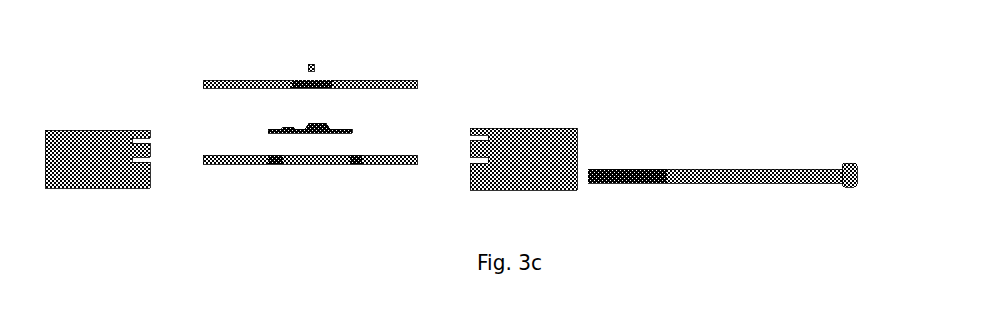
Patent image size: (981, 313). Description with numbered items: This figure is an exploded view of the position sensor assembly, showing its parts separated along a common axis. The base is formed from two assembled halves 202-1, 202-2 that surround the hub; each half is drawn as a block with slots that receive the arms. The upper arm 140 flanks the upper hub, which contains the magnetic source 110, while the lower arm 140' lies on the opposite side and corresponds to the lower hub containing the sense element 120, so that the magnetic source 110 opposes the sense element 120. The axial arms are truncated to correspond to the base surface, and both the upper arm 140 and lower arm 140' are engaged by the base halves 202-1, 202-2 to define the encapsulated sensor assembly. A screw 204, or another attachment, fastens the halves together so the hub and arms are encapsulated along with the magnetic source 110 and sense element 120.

The base half 202-1 is at (95, 130).
The base half 202-2 is at (545, 128).
The upper arm 140 is at (354, 60).
The lower arm 140' is at (310, 194).
The magnetic source 110 is at (315, 64).
The sense element 120 is at (352, 128).
The screw 204 is at (698, 169).